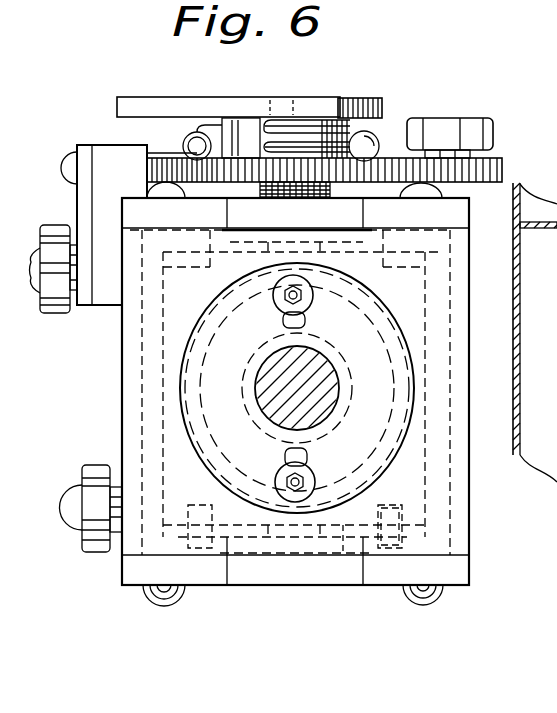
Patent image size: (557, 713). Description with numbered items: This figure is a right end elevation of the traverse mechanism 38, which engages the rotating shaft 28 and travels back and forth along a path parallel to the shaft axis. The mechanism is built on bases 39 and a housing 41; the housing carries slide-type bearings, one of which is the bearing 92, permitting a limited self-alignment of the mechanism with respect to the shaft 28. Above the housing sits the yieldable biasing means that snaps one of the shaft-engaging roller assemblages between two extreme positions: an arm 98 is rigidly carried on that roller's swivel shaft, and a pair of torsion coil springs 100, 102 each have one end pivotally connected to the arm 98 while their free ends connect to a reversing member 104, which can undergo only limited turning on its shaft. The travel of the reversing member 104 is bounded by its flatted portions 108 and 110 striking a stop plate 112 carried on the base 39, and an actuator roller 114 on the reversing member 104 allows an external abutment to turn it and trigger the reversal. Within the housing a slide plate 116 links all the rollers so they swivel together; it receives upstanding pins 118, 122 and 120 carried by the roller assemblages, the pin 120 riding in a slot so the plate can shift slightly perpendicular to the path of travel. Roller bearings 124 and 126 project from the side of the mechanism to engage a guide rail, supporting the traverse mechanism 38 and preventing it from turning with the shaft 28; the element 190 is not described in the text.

The shaft 28 is at (300, 392).
The traverse mechanism 38 is at (161, 624).
The bases 39 is at (450, 218).
The housing 41 is at (437, 460).
The bearing 92 is at (197, 393).
The arm 98 is at (242, 107).
The torsion coil spring 100 is at (313, 133).
The torsion coil spring 102 is at (218, 127).
The reversing member 104 is at (502, 170).
The flatted portion 108 is at (238, 168).
The flatted portion 110 is at (165, 153).
The stop plate 112 is at (103, 153).
The actuator roller 114 is at (490, 128).
The slide plate 116 is at (343, 532).
The pin 118 is at (425, 577).
The pin 120 is at (203, 540).
The pin 122 is at (388, 552).
The roller bearing 124 is at (55, 312).
The roller bearing 126 is at (93, 552).
The frame wall 190 is at (535, 332).